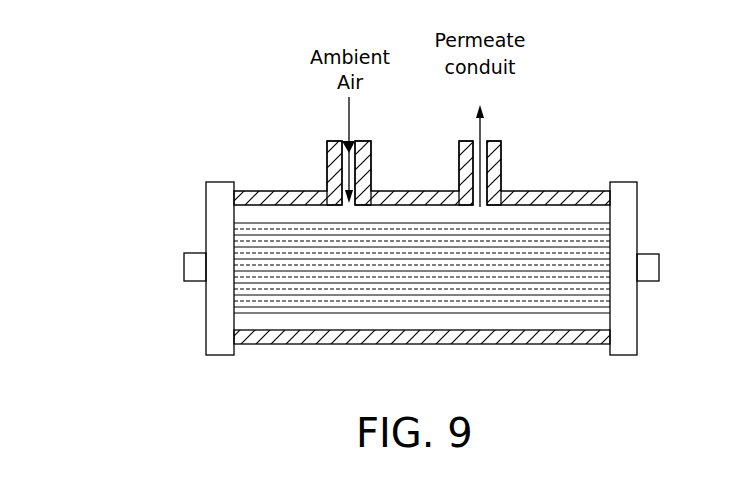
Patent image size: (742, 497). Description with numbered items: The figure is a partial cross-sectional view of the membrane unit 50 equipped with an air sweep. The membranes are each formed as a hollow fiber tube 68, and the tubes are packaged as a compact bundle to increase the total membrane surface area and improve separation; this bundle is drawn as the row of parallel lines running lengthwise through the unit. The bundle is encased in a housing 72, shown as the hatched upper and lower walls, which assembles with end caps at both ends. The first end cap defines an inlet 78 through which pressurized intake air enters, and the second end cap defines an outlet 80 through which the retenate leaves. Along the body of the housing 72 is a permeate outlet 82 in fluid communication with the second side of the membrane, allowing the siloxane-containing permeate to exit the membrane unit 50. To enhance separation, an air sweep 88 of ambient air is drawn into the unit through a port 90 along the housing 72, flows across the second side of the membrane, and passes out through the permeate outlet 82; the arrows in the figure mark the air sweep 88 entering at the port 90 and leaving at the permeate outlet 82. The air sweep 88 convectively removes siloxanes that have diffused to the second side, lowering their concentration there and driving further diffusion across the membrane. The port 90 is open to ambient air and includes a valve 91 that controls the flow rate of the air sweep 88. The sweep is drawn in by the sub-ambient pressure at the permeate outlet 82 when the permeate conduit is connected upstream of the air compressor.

The membrane unit 50 is at (230, 122).
The hollow fiber tube 68 is at (565, 240).
The housing 72 is at (515, 345).
The inlet 78 is at (193, 253).
The outlet 80 is at (648, 253).
The permeate outlet 82 is at (490, 176).
The air sweep 88 is at (346, 112).
The port 90 is at (361, 167).
The valve 91 is at (354, 143).